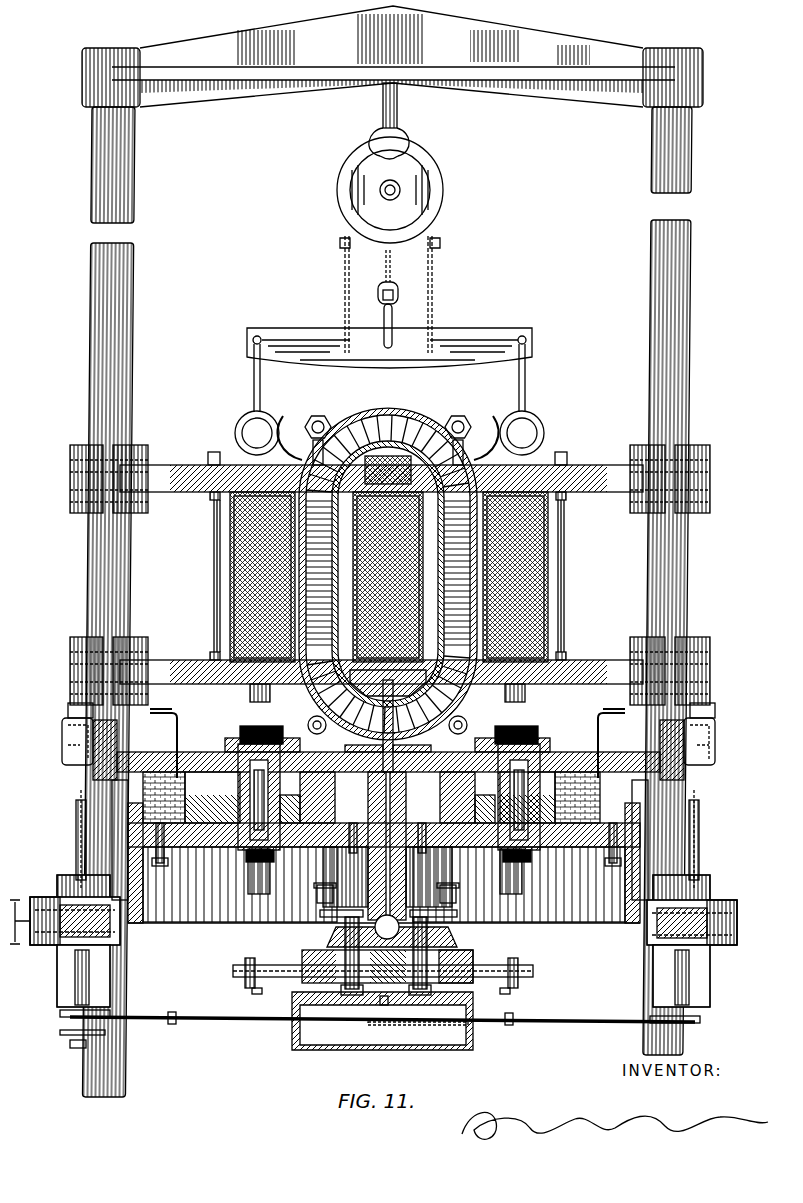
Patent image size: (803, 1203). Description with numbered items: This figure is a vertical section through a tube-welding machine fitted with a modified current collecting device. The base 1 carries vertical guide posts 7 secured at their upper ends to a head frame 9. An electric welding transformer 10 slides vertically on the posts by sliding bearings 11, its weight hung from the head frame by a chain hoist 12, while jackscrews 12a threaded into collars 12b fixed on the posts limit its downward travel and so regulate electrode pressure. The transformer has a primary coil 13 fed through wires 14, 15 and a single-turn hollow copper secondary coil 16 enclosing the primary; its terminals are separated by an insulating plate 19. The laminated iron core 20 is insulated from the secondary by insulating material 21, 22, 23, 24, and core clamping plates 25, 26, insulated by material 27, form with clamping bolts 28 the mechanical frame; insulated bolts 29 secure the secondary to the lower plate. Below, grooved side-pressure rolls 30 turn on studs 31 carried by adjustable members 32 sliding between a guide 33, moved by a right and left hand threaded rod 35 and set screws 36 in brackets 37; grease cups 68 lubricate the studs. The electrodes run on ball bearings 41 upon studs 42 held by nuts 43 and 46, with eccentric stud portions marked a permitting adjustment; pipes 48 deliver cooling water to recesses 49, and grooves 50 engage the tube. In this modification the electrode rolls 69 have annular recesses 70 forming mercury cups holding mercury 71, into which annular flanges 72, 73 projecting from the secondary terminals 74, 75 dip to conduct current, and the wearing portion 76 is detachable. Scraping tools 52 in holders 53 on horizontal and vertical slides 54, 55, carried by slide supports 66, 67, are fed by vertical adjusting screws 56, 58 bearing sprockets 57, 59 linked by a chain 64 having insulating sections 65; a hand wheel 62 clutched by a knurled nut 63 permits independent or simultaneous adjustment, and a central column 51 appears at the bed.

The base 1 is at (352, 1035).
The vertical guide posts 7 is at (385, 602).
The head frame 9 is at (392, 56).
The electric welding transformer 10 is at (578, 576).
The sliding bearings 11 is at (387, 575).
The chain hoist 12 is at (411, 165).
The jackscrews 12a is at (389, 707).
The collars 12b is at (388, 741).
The primary coil 13 is at (389, 345).
The wire 14 is at (291, 422).
The wire 15 is at (487, 424).
The secondary coil 16 is at (388, 557).
The insulating plate 19 is at (380, 738).
The laminated iron core 20 is at (389, 559).
The insulating material 21 is at (319, 574).
The insulating material 22 is at (388, 564).
The insulating material 23 is at (455, 574).
The insulating material 24 is at (390, 702).
The core clamping plate 25 is at (381, 454).
The core clamping plate 26 is at (381, 656).
The insulating material 27 is at (364, 576).
The clamping bolts 28 is at (191, 576).
The insulated bolts 29 is at (387, 701).
The side-pressure rolls 30 is at (379, 947).
The studs 31 is at (383, 931).
The adjustable members 32 is at (358, 959).
The guide 33 is at (385, 1032).
The right and left hand threaded rod 35 is at (483, 957).
The set screws 36 is at (383, 964).
The brackets 37 is at (380, 980).
The ball bearings 41 is at (387, 816).
The studs or trunnions 42 is at (400, 802).
The nuts 43 is at (388, 744).
The threaded nuts 46 is at (364, 877).
The pipes 48 is at (387, 732).
The recesses 49 is at (384, 838).
The grooves 50 is at (384, 869).
The central column 51 is at (396, 846).
The scraping tools 52 is at (383, 929).
The tool holders 53 is at (383, 943).
The horizontal tool feeding slide 54 is at (385, 937).
The vertical tool feeding slide 55 is at (386, 882).
The vertical adjusting screw 56 is at (699, 976).
The sprocket 57 is at (695, 1028).
The vertical adjusting screw 58 is at (63, 976).
The sprocket 59 is at (61, 1021).
The hand wheel 62 is at (40, 980).
The knurled nut 63 is at (79, 1053).
The sprocket chain 64 is at (382, 1039).
The insulating sections 65 is at (373, 1040).
The vertical slide support 66 is at (721, 840).
The vertical slide support 67 is at (52, 840).
The oil or grease cups 68 is at (385, 878).
The electrode rolls 69 is at (387, 865).
The annular recesses 70 is at (386, 847).
The mercury 71 is at (387, 797).
The annular flange 72 is at (191, 797).
The annular flange 73 is at (565, 797).
The transformer secondary terminal 74 is at (364, 755).
The transformer secondary terminal 75 is at (412, 755).
The detachable wearing portion 76 is at (384, 863).
The rings a is at (402, 718).